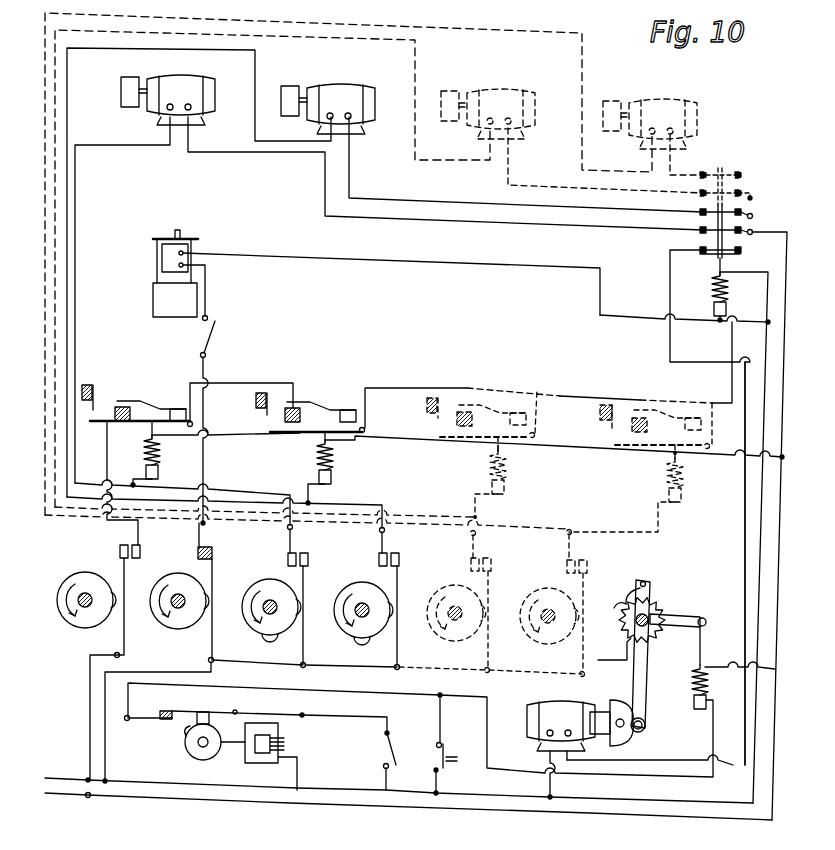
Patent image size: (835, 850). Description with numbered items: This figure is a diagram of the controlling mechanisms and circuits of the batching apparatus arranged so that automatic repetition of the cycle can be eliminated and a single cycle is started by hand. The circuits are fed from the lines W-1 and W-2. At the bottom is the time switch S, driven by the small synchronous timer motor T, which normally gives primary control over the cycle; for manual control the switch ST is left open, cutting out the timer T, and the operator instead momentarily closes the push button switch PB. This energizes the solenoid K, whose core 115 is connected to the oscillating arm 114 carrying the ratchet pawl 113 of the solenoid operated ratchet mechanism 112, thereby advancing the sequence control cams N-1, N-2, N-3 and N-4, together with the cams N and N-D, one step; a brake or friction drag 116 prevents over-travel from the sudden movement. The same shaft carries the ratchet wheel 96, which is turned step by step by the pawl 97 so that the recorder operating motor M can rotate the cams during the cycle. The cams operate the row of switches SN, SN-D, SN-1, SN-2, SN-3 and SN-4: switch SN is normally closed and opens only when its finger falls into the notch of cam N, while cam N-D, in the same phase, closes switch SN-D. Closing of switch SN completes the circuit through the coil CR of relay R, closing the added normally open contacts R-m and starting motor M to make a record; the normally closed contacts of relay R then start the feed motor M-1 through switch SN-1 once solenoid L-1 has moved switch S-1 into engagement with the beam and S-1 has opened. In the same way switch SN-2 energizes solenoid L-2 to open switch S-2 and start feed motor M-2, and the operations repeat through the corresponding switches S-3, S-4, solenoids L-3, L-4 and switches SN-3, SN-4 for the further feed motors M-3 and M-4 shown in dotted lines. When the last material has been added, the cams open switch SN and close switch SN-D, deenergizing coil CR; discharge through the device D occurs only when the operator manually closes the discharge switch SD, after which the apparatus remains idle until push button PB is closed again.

The feed motor M-1 is at (186, 82).
The feed motor M-2 is at (344, 88).
The motor M-3 is at (512, 92).
The motor M-4 is at (684, 100).
The relay R is at (742, 182).
The normally open relay contacts R-m is at (753, 240).
The relay coil CR is at (712, 292).
The device D is at (376, 273).
The discharge switch SD is at (217, 321).
The switch S-1 is at (133, 414).
The switch S-2 is at (306, 413).
The switch S-3 is at (478, 418).
The switch S-4 is at (660, 430).
The solenoid L-1 is at (160, 456).
The solenoid L-2 is at (335, 463).
The solenoid coil L-3 is at (513, 470).
The solenoid coil L-4 is at (685, 479).
The switch SN is at (136, 545).
The switch SN-D is at (214, 546).
The switch SN-1 is at (304, 551).
The switch SN-2 is at (398, 551).
The switch SN-3 is at (493, 557).
The switch SN-4 is at (588, 560).
The controlling cam N is at (78, 574).
The cam N-D is at (180, 576).
The sequence control cam N-1 is at (270, 580).
The sequence control cam N-2 is at (366, 583).
The notched disc N-3 is at (457, 587).
The notched disc N-4 is at (551, 590).
The pawl 97 is at (632, 587).
The ratchet wheel 96 is at (624, 600).
The ratchet pawl 113 is at (676, 600).
The oscillating arm 114 is at (690, 614).
The solenoid operated ratchet mechanism 112 is at (682, 628).
The solenoid core 115 is at (698, 660).
The brake or friction drag 116 is at (624, 676).
The solenoid K is at (692, 695).
The recorder operating motor M is at (540, 705).
The time switch S is at (158, 714).
The timer motor T is at (290, 744).
The switch ST is at (391, 761).
The push button switch PB is at (466, 742).
The power line W-1 is at (68, 776).
The power line W-2 is at (72, 796).